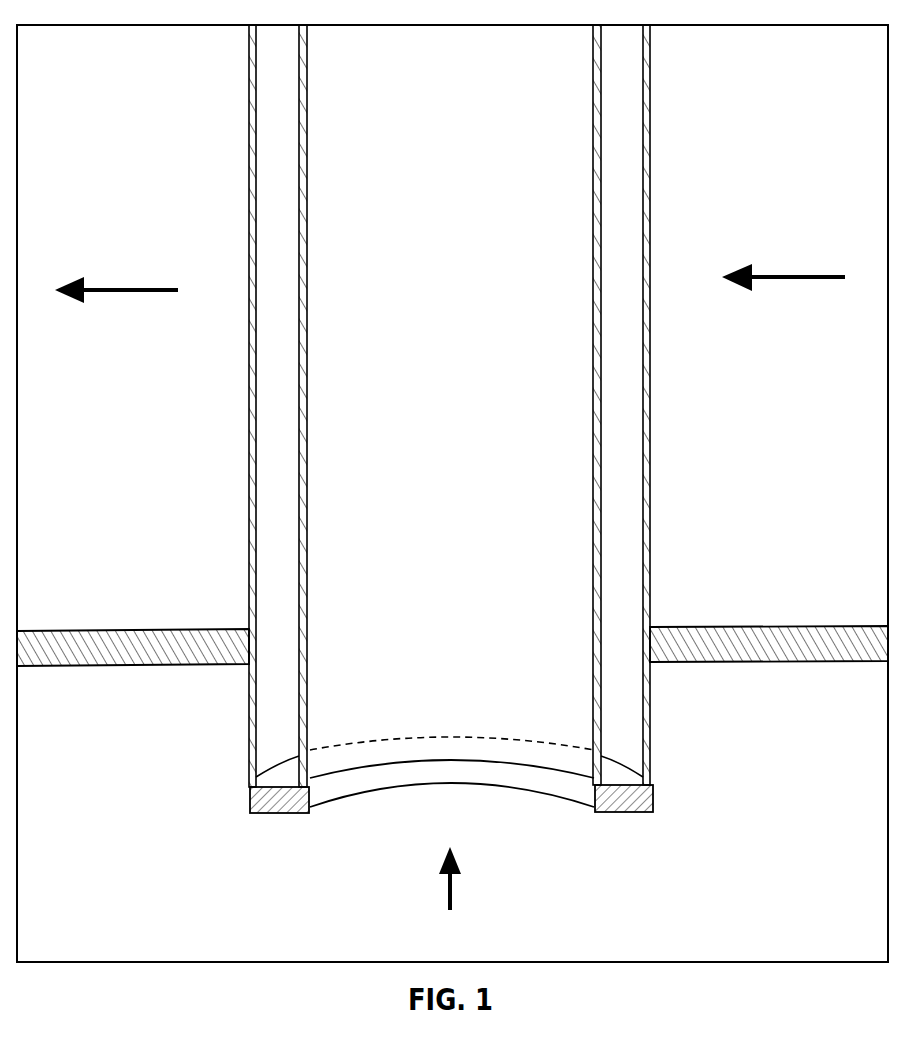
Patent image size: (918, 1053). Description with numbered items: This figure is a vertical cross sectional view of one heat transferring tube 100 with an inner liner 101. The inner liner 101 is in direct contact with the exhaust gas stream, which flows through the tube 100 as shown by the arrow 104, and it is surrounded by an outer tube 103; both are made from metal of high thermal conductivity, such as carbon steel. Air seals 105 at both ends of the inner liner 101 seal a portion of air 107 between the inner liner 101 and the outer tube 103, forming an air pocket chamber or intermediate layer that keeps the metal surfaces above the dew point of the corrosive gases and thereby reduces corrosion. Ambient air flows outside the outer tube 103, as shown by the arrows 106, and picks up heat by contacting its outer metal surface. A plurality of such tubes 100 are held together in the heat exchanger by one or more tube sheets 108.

The heat transferring tube 100 is at (683, 180).
The inner liner 101 is at (311, 570).
The outer tube 103 is at (655, 438).
The arrow 104 is at (452, 893).
The air seals 105 is at (272, 816).
The arrows 106 is at (112, 294).
The air 107 is at (277, 430).
The tube sheets 108 is at (768, 627).